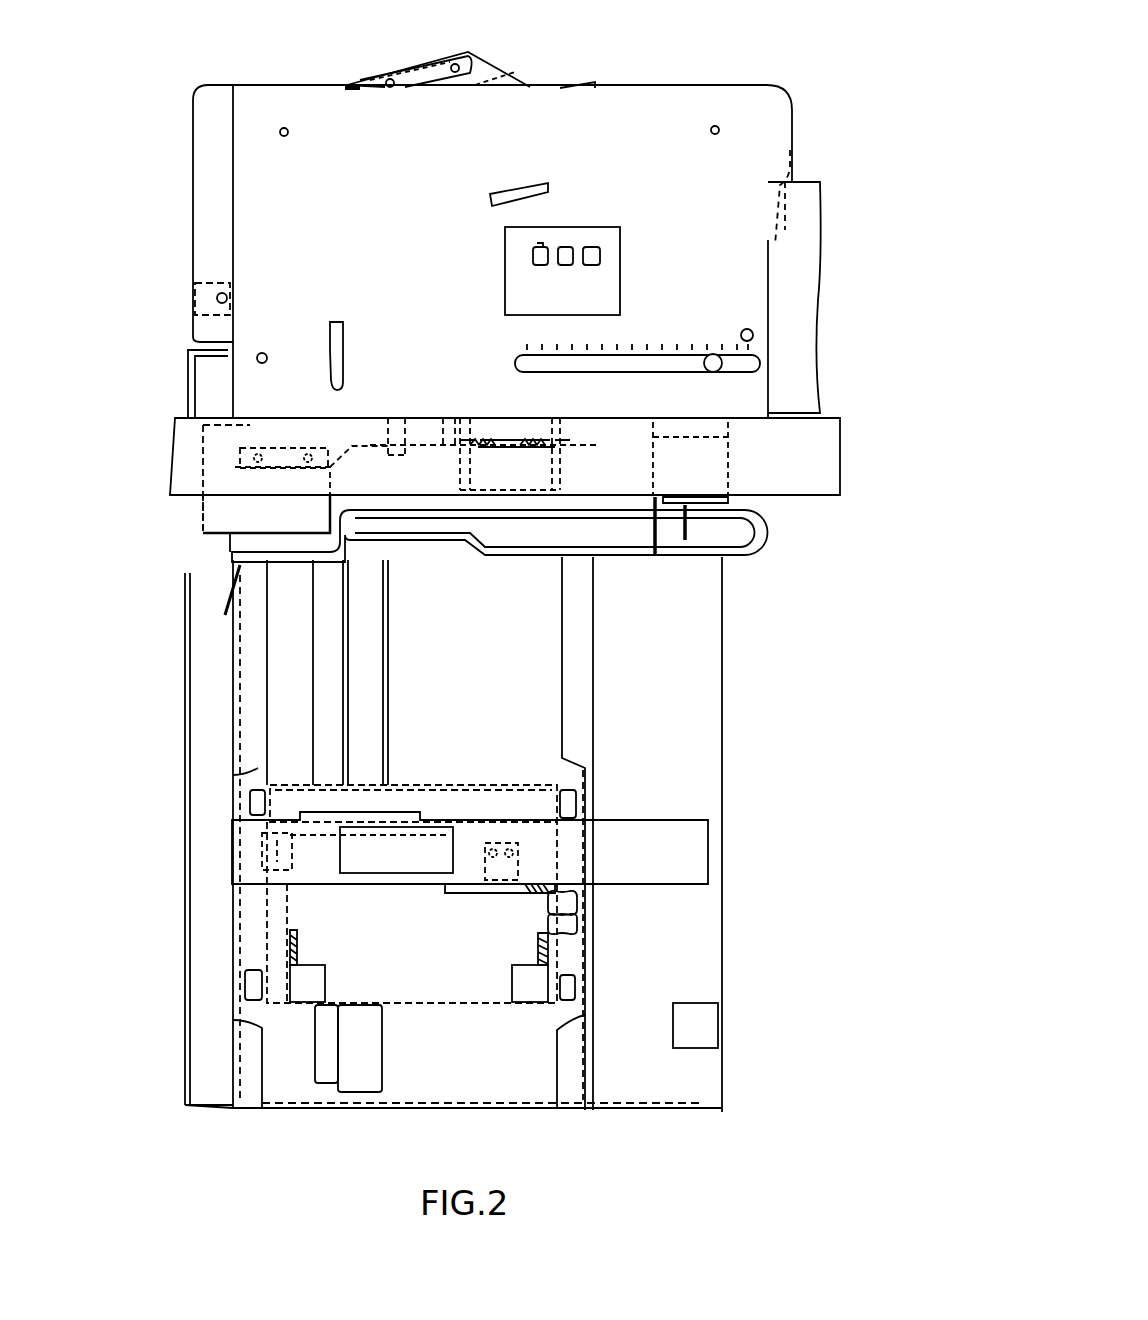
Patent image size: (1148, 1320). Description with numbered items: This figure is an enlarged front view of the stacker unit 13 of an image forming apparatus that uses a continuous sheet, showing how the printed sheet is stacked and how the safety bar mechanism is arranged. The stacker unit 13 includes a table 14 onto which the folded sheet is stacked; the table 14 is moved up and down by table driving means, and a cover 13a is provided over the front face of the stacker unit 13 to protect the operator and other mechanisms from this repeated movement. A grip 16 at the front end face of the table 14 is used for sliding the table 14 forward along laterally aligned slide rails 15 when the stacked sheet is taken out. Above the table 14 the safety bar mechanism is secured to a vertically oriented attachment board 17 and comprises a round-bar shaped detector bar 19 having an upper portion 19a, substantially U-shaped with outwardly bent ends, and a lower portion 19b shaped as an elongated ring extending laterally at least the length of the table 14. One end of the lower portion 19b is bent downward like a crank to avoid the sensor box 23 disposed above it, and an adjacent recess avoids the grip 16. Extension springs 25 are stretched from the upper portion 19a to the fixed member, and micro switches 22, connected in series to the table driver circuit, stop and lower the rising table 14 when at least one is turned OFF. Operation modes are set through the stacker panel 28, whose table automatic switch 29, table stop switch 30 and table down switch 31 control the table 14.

The stacker unit 13 is at (835, 282).
The cover 13a is at (270, 220).
The table 14 is at (692, 857).
The slide rails 15 is at (258, 855).
The grip 16 is at (360, 850).
The attachment board 17 is at (825, 455).
The detector bar 19 is at (758, 547).
The upper portion 19a is at (560, 478).
The lower portion 19b is at (632, 557).
The micro switches 22 is at (455, 420).
The sensor box 23 is at (250, 510).
The extension springs 25 is at (490, 425).
The stacker panel 28 is at (628, 243).
The table automatic switch 29 is at (545, 245).
The table stop switch 30 is at (568, 247).
The table down switch 31 is at (595, 247).